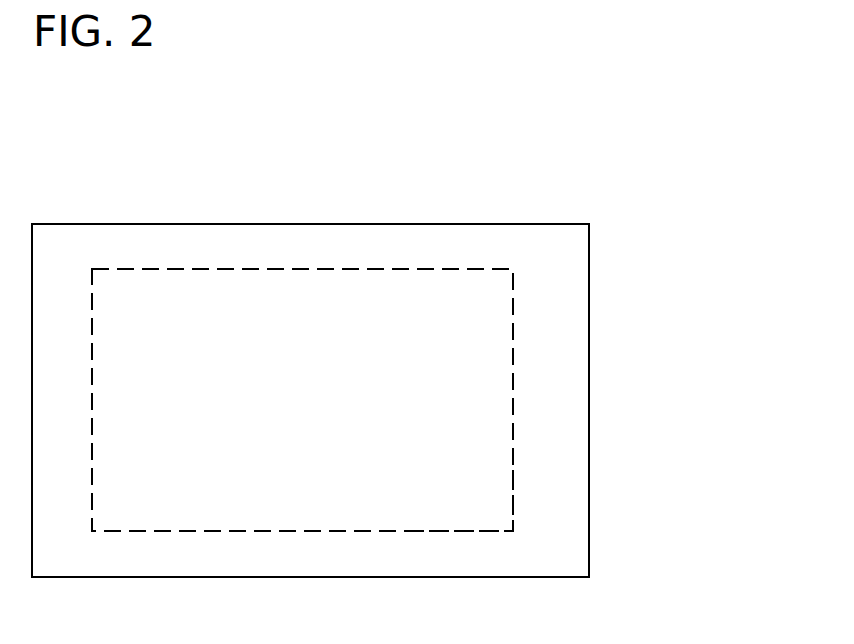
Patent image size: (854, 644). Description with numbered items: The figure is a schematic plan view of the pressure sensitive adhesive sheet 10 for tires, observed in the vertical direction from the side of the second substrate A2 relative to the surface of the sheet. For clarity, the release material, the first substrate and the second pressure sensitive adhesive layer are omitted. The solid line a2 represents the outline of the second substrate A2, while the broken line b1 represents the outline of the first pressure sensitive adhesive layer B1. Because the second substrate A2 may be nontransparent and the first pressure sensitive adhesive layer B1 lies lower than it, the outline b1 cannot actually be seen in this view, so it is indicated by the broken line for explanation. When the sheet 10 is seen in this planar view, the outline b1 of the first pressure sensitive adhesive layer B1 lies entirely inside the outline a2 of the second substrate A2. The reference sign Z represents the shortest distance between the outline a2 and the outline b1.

The pressure sensitive adhesive sheet for tires 10 is at (423, 168).
The second substrate A2 is at (539, 263).
The outline of the second substrate a2 is at (590, 353).
The first pressure sensitive adhesive layer B1 is at (483, 439).
The outline of the first pressure sensitive adhesive layer b1 is at (514, 517).
The shortest distance Z is at (408, 531).